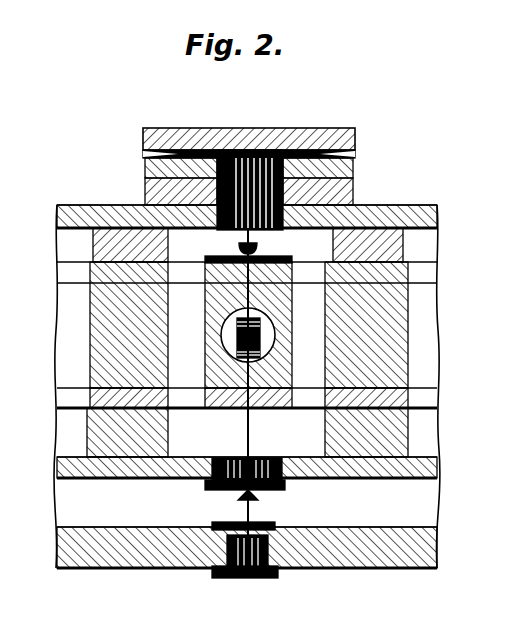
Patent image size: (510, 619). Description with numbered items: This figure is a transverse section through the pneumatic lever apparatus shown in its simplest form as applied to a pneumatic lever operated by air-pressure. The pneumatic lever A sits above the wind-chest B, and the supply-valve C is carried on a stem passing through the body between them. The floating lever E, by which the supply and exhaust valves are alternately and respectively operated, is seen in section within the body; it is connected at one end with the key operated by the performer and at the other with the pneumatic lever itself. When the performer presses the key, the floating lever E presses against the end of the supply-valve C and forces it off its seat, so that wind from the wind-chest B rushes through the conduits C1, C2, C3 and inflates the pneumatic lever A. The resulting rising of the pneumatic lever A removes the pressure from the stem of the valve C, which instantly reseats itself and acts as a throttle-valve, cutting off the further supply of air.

The pneumatic lever A is at (259, 130).
The wind-chest B is at (247, 512).
The supply-valve C is at (249, 404).
The conduit C1 is at (247, 432).
The conduit C2 is at (247, 335).
The conduit C3 is at (247, 245).
The floating lever E is at (235, 349).